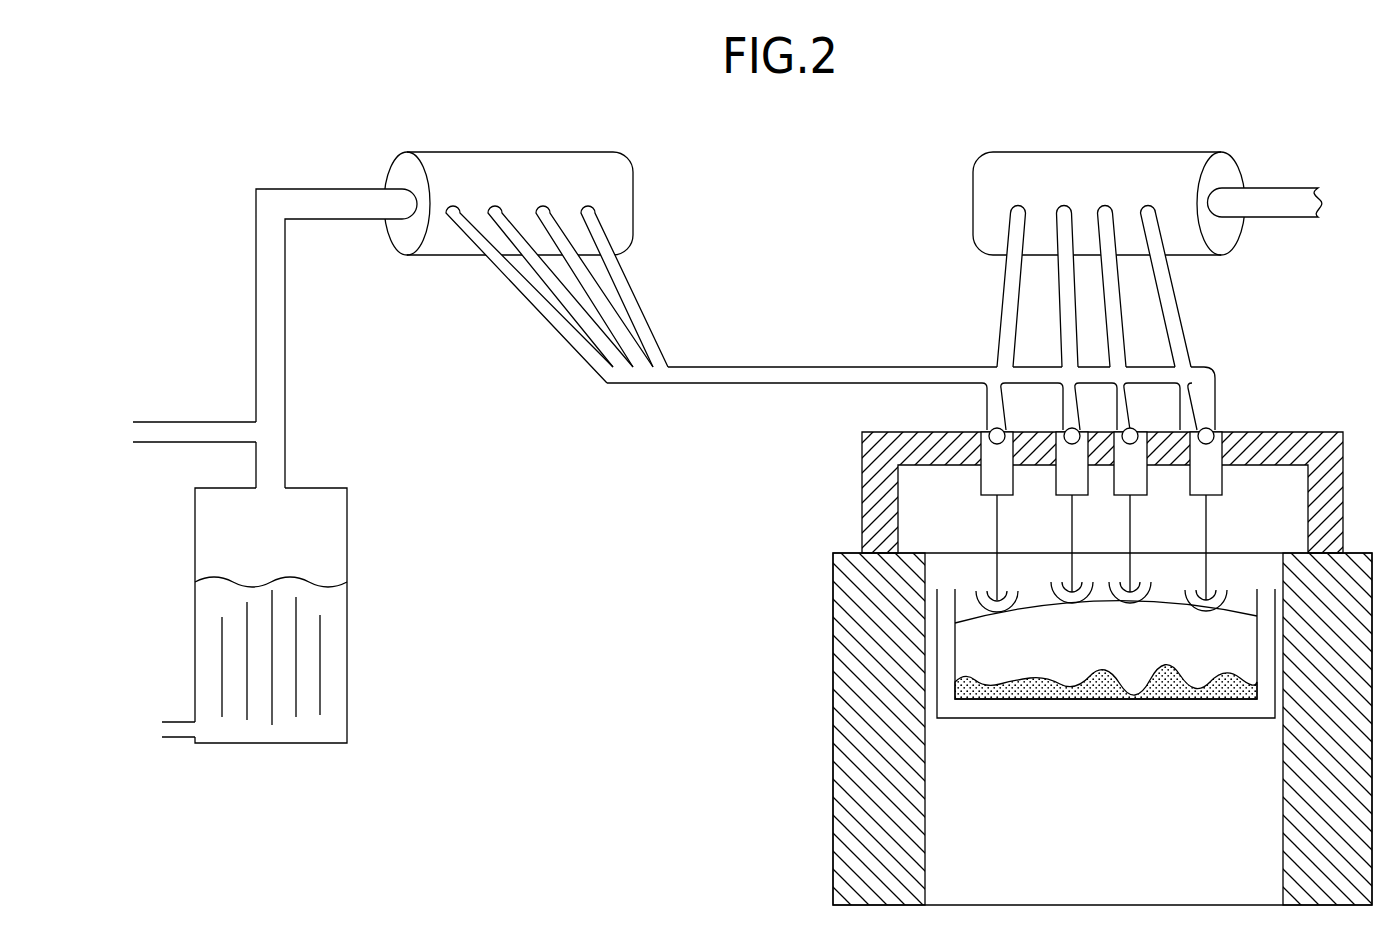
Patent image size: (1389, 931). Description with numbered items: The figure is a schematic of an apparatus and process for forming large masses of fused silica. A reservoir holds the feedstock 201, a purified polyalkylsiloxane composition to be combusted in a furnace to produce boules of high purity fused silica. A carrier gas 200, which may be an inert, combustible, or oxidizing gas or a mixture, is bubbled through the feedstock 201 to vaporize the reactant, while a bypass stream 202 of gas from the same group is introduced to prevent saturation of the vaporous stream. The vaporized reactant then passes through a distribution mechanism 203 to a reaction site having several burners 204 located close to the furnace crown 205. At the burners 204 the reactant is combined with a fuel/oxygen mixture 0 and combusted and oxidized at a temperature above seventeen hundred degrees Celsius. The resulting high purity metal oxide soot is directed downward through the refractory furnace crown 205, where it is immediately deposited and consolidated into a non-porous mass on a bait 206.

The carrier gas 200 is at (145, 729).
The feedstock 201 is at (284, 553).
The bypass stream 202 is at (118, 431).
The distribution mechanism 203 is at (538, 153).
The burners 204 is at (1070, 482).
The furnace crown 205 is at (860, 512).
The bait 206 is at (1108, 718).
The fuel/oxygen mixture 0 is at (1332, 203).